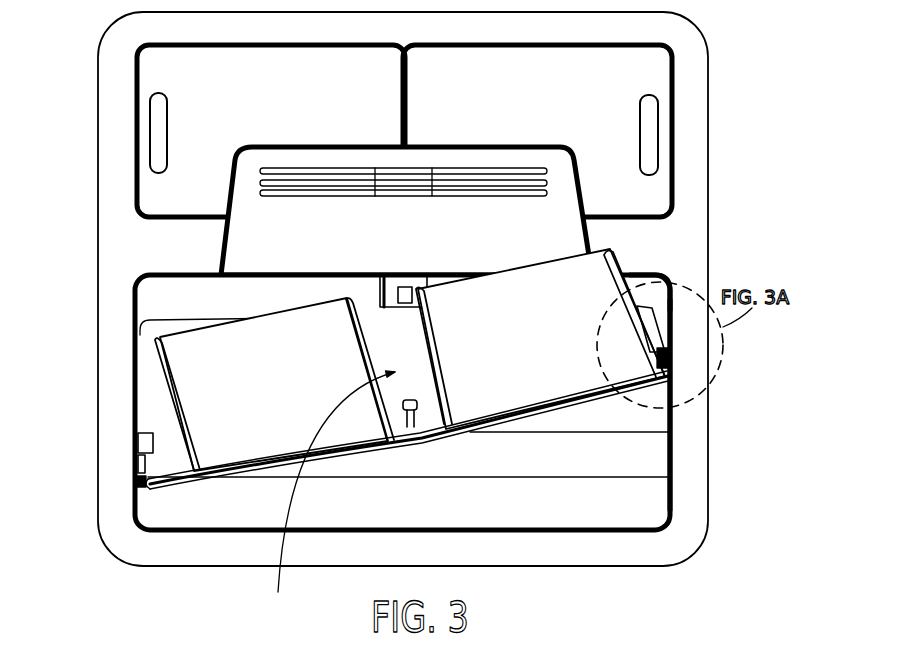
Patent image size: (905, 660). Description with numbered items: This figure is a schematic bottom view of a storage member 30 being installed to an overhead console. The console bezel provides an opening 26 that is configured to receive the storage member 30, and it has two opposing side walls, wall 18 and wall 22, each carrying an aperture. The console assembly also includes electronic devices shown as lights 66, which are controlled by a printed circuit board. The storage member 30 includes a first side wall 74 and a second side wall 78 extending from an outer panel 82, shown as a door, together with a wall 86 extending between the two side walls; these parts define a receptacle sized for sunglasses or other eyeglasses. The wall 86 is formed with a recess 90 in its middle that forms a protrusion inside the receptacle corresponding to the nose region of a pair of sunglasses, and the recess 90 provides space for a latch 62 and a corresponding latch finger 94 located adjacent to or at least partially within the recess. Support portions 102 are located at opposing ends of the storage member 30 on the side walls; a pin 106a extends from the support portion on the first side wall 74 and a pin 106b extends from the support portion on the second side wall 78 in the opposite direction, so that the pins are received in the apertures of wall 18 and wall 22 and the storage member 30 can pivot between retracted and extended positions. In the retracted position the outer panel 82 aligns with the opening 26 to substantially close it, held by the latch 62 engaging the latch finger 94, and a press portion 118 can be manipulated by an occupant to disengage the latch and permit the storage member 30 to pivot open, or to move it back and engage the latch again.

The wall 18 is at (78, 333).
The wall 22 is at (733, 448).
The opening 26 is at (615, 460).
The storage member 30 is at (677, 372).
The latch 62 is at (397, 272).
The lights 66 is at (183, 77).
The first side wall 74 is at (160, 402).
The second side wall 78 is at (673, 283).
The outer panel 82 is at (520, 417).
The wall 86 is at (200, 374).
The recess 90 is at (332, 497).
The latch finger 94 is at (400, 403).
The support portions 102 is at (152, 450).
The pin 106a is at (135, 505).
The pin 106b is at (667, 357).
The press portion 118 is at (423, 448).